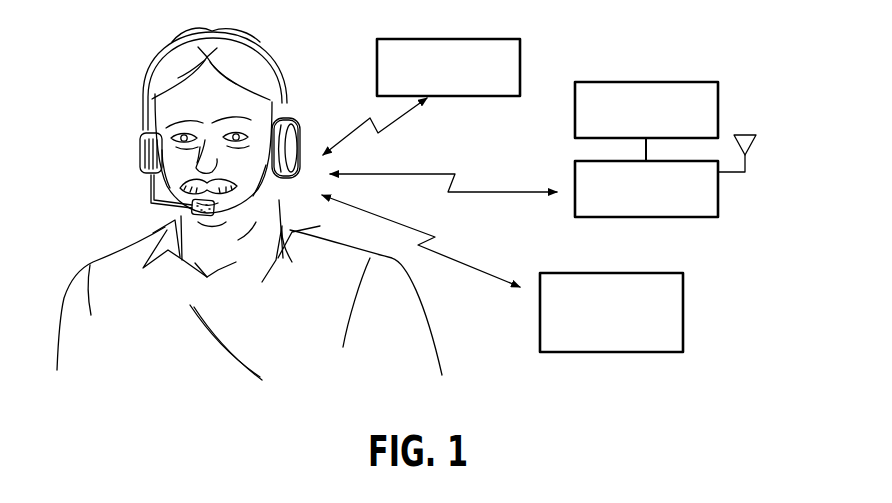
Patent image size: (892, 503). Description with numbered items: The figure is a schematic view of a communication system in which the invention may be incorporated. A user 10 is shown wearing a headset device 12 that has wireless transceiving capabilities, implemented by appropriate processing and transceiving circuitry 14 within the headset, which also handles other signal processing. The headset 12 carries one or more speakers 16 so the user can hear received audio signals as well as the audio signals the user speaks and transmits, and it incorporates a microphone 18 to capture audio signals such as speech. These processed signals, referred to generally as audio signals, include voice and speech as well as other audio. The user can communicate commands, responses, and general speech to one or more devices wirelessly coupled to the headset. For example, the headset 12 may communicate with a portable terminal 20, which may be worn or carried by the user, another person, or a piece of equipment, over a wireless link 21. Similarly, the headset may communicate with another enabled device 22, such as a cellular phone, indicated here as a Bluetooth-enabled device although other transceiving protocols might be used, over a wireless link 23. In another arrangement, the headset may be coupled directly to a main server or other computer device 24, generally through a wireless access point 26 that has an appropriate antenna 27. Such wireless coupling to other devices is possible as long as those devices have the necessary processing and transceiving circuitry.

The user 10 is at (150, 345).
The headset device 12 is at (140, 58).
The processing and transceiving circuitry 14 is at (300, 117).
The speakers 16 is at (140, 137).
The microphone 18 is at (202, 215).
The portable terminal 20 is at (507, 39).
The wireless link 21 is at (384, 122).
The Bluetooth-enabled device 22 is at (660, 352).
The wireless link 23 is at (445, 258).
The server 24 is at (700, 82).
The wireless access point 26 is at (677, 218).
The antenna 27 is at (748, 143).